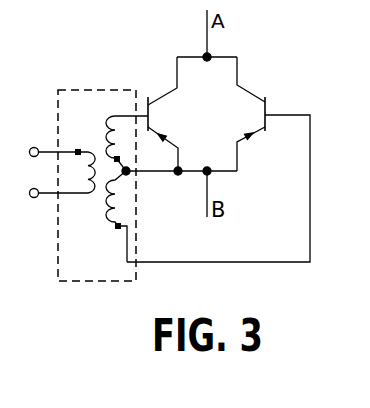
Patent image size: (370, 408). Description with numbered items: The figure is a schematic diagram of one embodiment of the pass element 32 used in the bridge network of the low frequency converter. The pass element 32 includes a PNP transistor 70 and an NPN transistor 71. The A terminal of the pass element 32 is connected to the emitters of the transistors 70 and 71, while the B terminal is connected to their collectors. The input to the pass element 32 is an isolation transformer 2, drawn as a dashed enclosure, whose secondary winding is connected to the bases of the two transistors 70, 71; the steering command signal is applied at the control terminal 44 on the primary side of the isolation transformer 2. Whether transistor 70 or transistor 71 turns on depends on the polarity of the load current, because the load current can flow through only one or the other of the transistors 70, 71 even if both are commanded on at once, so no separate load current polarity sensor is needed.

The isolation transformer 2 is at (88, 283).
The control terminal 44 is at (62, 158).
The PNP transistor 70 is at (155, 78).
The NPN transistor 71 is at (252, 78).
The pass element 32 is at (228, 287).